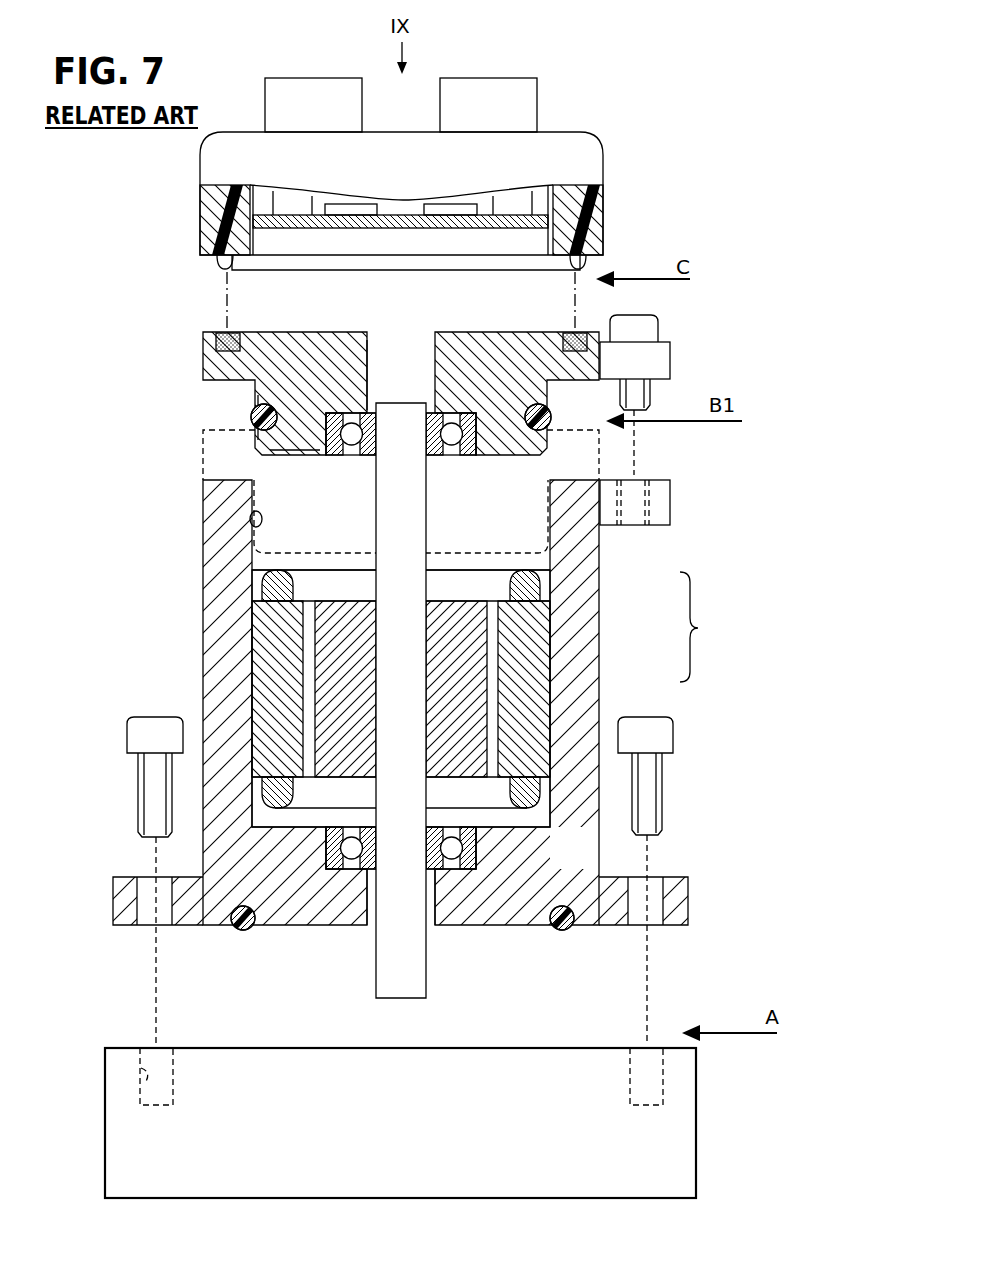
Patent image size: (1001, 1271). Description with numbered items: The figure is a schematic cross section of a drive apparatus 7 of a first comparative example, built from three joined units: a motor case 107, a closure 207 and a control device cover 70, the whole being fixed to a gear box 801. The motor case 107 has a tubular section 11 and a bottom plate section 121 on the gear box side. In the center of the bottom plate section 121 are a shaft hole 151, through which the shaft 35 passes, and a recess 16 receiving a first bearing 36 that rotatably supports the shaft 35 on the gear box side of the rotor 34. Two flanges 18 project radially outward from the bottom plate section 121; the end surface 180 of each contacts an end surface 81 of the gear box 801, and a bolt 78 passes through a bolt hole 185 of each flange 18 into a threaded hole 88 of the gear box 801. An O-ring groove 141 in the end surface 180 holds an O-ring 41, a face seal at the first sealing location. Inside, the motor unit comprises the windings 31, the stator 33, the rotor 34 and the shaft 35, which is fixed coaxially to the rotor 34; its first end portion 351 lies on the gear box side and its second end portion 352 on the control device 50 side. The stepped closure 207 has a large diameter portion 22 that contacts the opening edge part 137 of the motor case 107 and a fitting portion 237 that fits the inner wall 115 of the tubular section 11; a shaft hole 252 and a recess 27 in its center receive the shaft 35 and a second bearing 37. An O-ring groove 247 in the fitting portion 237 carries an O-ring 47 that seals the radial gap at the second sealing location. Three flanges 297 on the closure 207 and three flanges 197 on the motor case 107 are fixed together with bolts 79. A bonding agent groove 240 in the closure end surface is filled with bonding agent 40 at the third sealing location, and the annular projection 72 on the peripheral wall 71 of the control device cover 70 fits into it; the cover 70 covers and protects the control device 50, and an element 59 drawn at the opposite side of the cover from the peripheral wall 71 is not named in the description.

The drive apparatus 7 is at (582, 78).
The control device cover 70 is at (604, 139).
The peripheral wall 71 is at (208, 222).
The seal member 59 is at (592, 228).
The control device 50 is at (403, 198).
The annular projection 72 is at (220, 265).
The large diameter portion 22 is at (210, 360).
The closure 207 is at (481, 356).
The shaft hole 252 is at (372, 356).
The recess 27 is at (322, 425).
The fitting portion 237 is at (300, 450).
The bonding agent groove 240 is at (228, 334).
The bonding agent 40 is at (572, 334).
The O-ring groove 247 is at (252, 416).
The O-ring 47 is at (552, 419).
The flanges 297 is at (640, 358).
The bolts 79 is at (650, 328).
The second bearing 37 is at (478, 458).
The opening edge part 137 is at (218, 478).
The tubular section 11 is at (225, 660).
The motor case 107 is at (585, 550).
The bottom plate section 121 is at (245, 855).
The recess 16 is at (327, 848).
The end surface 180 is at (505, 928).
The shaft hole 151 is at (367, 908).
The inner wall 115 is at (250, 525).
The flanges 197 is at (660, 505).
The flanges 18 is at (125, 910).
The bolt hole 185 is at (143, 917).
The O-ring groove 141 is at (241, 930).
The O-ring 41 is at (562, 931).
The windings 31 is at (560, 583).
The stator 33 is at (540, 615).
The rotor 34 is at (465, 648).
The shaft 35 is at (415, 680).
The second end portion 352 is at (402, 415).
The first end portion 351 is at (406, 998).
The first bearing 36 is at (480, 850).
The bolt 78 is at (145, 727).
The gear box 801 is at (672, 1135).
The end surface 81 is at (590, 1048).
The threaded hole 88 is at (140, 1087).